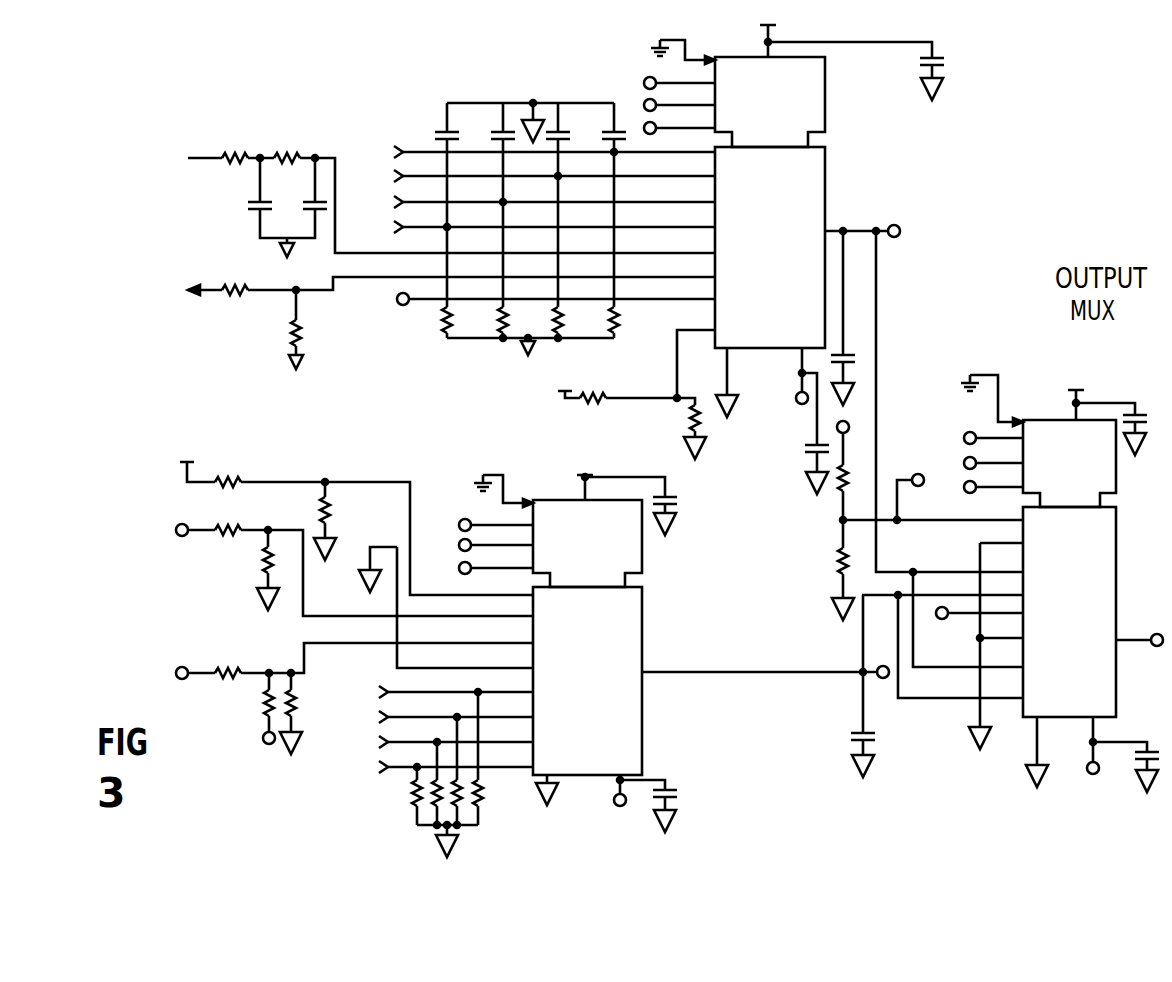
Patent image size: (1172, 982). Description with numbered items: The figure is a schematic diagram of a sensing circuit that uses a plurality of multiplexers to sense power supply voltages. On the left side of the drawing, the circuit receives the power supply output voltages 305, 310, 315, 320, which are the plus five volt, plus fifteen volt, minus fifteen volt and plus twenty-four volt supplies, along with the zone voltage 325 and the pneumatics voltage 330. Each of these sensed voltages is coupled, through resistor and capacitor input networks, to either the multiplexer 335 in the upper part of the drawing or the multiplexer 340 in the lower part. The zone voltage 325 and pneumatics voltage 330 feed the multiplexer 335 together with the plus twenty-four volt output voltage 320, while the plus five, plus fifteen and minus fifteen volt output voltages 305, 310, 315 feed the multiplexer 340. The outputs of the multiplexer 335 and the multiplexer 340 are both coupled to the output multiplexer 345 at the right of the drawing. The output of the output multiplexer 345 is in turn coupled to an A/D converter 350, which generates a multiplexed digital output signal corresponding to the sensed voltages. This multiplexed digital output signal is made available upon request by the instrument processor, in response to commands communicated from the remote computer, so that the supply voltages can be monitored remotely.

The power supply output voltage (+5 V) 305 is at (185, 480).
The power supply output voltage (+15 V) 310 is at (187, 541).
The power supply output voltage (−15 V) 315 is at (195, 673).
The power supply output voltage (+24 V) 320 is at (556, 395).
The zone voltage 325 is at (203, 152).
The pneumatics voltage 330 is at (207, 287).
The multiplexer 335 is at (762, 56).
The multiplexer 340 is at (573, 498).
The output multiplexer 345 is at (1045, 418).
The A/D converter 350 is at (1117, 682).